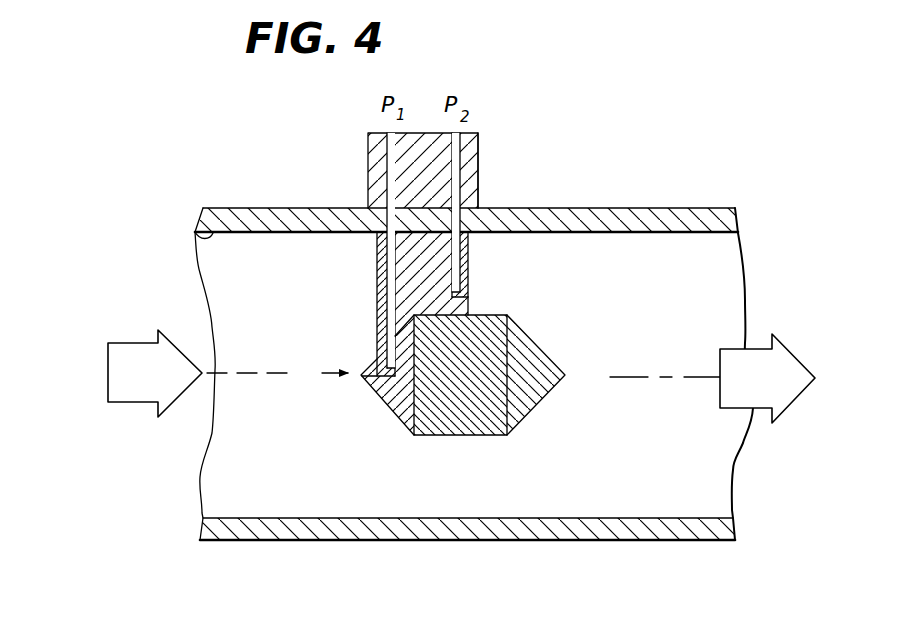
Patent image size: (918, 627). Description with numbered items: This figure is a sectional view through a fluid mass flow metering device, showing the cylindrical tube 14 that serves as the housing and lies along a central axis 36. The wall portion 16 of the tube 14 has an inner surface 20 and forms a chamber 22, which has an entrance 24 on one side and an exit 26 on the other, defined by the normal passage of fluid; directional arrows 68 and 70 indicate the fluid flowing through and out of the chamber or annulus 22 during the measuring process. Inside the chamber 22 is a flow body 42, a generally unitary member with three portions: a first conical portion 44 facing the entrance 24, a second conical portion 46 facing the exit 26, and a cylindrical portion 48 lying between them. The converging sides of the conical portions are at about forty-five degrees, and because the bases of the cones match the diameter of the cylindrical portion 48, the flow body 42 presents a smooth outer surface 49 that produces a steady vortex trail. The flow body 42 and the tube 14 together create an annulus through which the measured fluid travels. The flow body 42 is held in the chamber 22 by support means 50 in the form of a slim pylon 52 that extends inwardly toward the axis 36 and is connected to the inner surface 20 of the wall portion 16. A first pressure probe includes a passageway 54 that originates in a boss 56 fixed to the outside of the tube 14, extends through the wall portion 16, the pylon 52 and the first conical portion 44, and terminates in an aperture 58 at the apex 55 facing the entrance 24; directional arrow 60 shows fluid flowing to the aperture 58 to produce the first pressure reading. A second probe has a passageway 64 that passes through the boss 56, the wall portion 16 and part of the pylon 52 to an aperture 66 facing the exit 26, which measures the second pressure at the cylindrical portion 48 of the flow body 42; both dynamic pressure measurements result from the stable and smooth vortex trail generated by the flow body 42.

The tube 14 is at (228, 217).
The wall portion 16 is at (720, 212).
The inner surface 20 is at (193, 237).
The chamber 22 is at (605, 500).
The entrance 24 is at (222, 490).
The exit 26 is at (725, 262).
The central axis 36 is at (700, 375).
The flow body 42 is at (549, 311).
The first conical portion 44 is at (398, 400).
The second conical portion 46 is at (557, 358).
The cylindrical portion 48 is at (453, 430).
The smooth outer surface 49 is at (497, 440).
The support means 50 is at (371, 264).
The pylon 52 is at (383, 283).
The passageway 54 is at (372, 156).
The apex 55 is at (362, 368).
The boss 56 is at (482, 150).
The aperture 58 is at (353, 383).
The directional arrow 60 is at (358, 390).
The passageway 64 is at (458, 180).
The aperture 66 is at (472, 288).
The directional arrow 68 is at (122, 360).
The directional arrow 70 is at (783, 397).